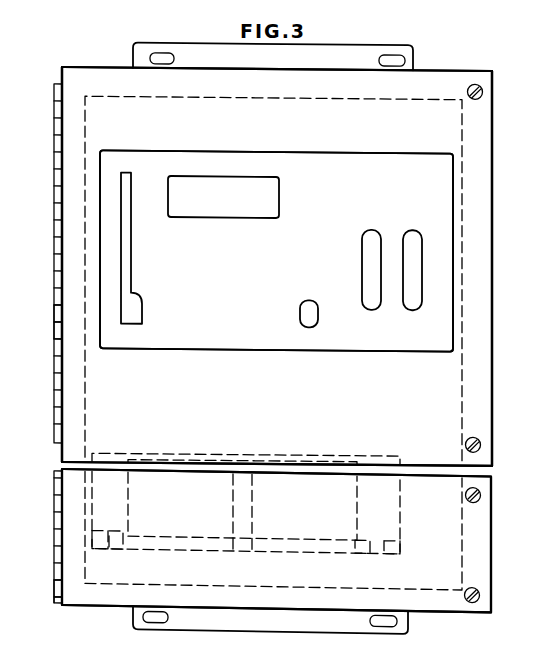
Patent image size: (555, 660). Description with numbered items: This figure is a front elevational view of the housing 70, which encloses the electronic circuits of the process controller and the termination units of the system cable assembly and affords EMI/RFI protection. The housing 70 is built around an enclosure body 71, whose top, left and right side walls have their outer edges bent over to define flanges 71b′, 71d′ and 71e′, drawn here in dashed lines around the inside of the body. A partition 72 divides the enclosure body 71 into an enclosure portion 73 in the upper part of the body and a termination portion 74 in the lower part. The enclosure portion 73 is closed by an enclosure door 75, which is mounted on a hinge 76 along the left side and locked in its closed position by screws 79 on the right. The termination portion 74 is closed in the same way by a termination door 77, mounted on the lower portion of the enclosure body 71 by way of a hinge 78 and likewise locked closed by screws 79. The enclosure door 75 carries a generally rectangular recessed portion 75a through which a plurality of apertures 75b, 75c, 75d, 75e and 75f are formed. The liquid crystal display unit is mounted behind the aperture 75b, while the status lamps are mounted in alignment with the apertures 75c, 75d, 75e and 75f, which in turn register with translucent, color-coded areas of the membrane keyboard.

The housing 70 is at (493, 340).
The enclosure body 71 is at (492, 128).
The flange 71b′ is at (428, 82).
The flange 71d′ is at (60, 412).
The flange 71e′ is at (493, 222).
The partition 72 is at (77, 502).
The enclosure portion 73 is at (72, 386).
The termination portion 74 is at (80, 560).
The enclosure door 75 is at (256, 158).
The recessed portion 75a is at (397, 166).
The aperture 75b is at (279, 205).
The aperture 75c is at (370, 232).
The aperture 75d is at (413, 232).
The aperture 75e is at (308, 300).
The aperture 75f is at (133, 313).
The hinge 76 is at (55, 318).
The termination door 77 is at (485, 510).
The hinge 78 is at (53, 580).
The screws 79 is at (484, 88).